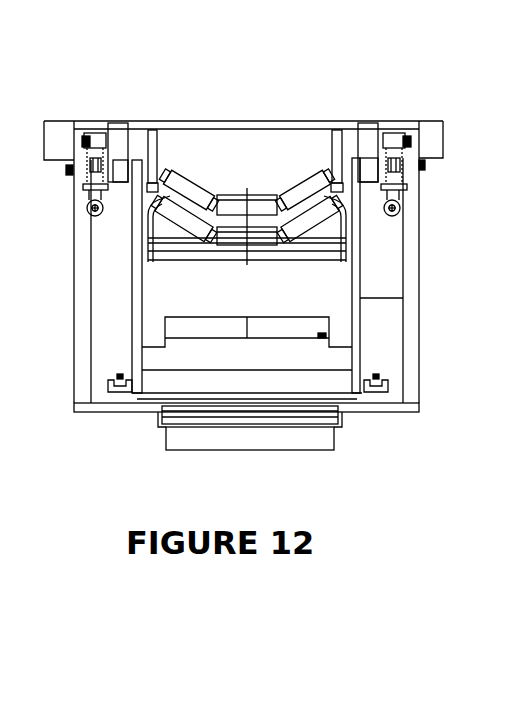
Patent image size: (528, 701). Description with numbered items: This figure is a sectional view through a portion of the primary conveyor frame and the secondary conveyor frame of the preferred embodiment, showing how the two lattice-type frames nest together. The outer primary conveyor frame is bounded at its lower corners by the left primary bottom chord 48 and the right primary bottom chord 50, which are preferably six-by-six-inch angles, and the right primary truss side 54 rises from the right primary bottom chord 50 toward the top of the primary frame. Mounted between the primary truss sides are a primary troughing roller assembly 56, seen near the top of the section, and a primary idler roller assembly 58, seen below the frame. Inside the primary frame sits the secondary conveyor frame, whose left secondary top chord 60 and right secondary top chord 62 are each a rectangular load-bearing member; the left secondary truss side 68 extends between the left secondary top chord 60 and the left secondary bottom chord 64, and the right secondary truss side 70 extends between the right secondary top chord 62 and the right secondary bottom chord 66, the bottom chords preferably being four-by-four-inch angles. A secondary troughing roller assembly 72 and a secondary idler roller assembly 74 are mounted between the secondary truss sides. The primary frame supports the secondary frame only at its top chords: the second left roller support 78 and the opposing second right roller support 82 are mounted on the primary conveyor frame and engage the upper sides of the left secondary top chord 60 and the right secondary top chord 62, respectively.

The left primary bottom chord 48 is at (104, 374).
The right primary bottom chord 50 is at (392, 374).
The right primary truss side 54 is at (423, 265).
The primary troughing roller assembly 56 is at (206, 174).
The primary idler roller assembly 58 is at (207, 449).
The left secondary top chord 60 is at (122, 194).
The right secondary top chord 62 is at (371, 193).
The left secondary bottom chord 64 is at (139, 394).
The right secondary bottom chord 66 is at (363, 408).
The left secondary truss side 68 is at (149, 289).
The right secondary truss side 70 is at (365, 298).
The secondary troughing roller assembly 72 is at (303, 224).
The secondary idler roller assembly 74 is at (269, 313).
The second left roller support 78 is at (152, 131).
The second right roller support 82 is at (352, 131).